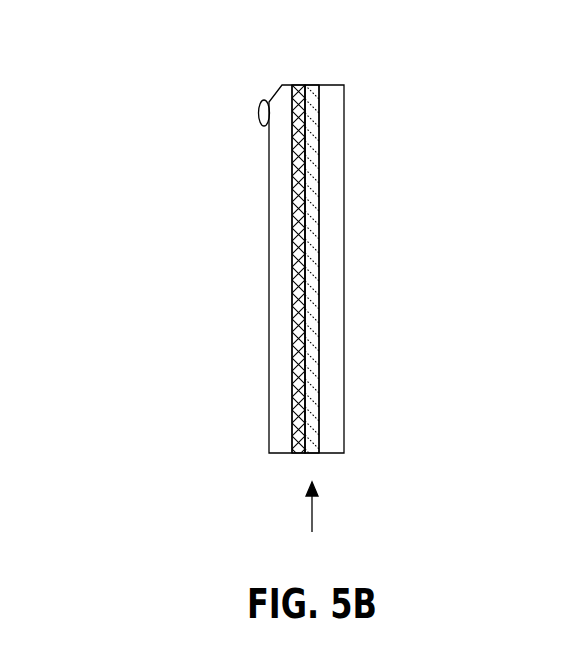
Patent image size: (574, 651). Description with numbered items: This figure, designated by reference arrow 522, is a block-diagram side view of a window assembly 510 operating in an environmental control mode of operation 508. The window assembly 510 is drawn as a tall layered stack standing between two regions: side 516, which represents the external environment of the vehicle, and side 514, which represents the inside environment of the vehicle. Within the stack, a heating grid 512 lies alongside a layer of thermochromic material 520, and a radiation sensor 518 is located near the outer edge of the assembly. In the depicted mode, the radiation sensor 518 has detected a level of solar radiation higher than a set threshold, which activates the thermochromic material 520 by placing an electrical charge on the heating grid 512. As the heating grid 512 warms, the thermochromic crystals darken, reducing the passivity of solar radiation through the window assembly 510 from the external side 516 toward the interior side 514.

The environmental control mode of operation 508 is at (88, 77).
The window assembly 510 is at (344, 123).
The heating grid 512 is at (319, 177).
The side representative of the inside environment of the vehicle 514 is at (487, 238).
The side representative of the external environment of the vehicle 516 is at (181, 238).
The radiation sensor 518 is at (258, 112).
The thermochromic material 520 is at (293, 211).
The reference arrow 522 is at (313, 520).